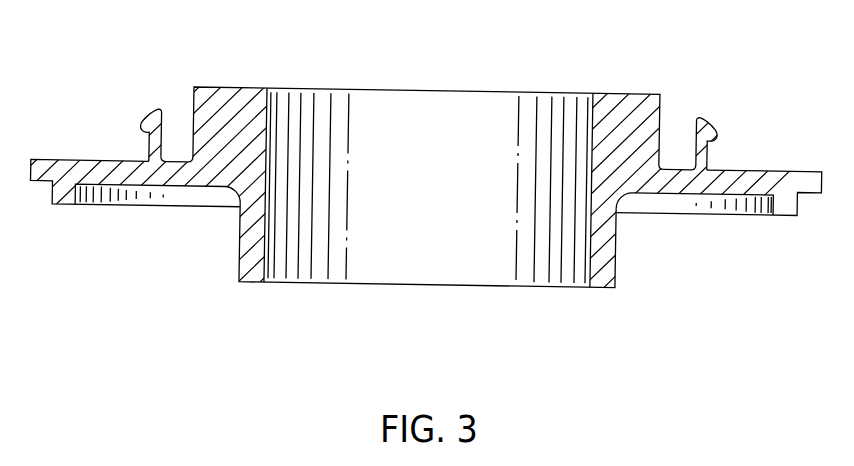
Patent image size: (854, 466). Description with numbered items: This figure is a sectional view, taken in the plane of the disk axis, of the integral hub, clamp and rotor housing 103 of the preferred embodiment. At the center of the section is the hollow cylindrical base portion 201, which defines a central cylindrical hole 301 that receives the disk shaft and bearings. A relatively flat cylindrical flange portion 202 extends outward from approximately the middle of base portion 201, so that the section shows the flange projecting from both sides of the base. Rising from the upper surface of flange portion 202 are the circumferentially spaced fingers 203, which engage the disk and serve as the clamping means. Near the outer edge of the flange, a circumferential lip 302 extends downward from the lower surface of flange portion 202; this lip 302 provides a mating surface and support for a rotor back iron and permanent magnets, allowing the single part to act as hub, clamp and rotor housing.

The integral hub, clamp and rotor housing 103 is at (580, 63).
The hollow cylindrical base portion 201 is at (247, 87).
The flange portion 202 is at (83, 161).
The fingers 203 is at (155, 111).
The central cylindrical hole 301 is at (486, 196).
The circumferential lip 302 is at (65, 208).